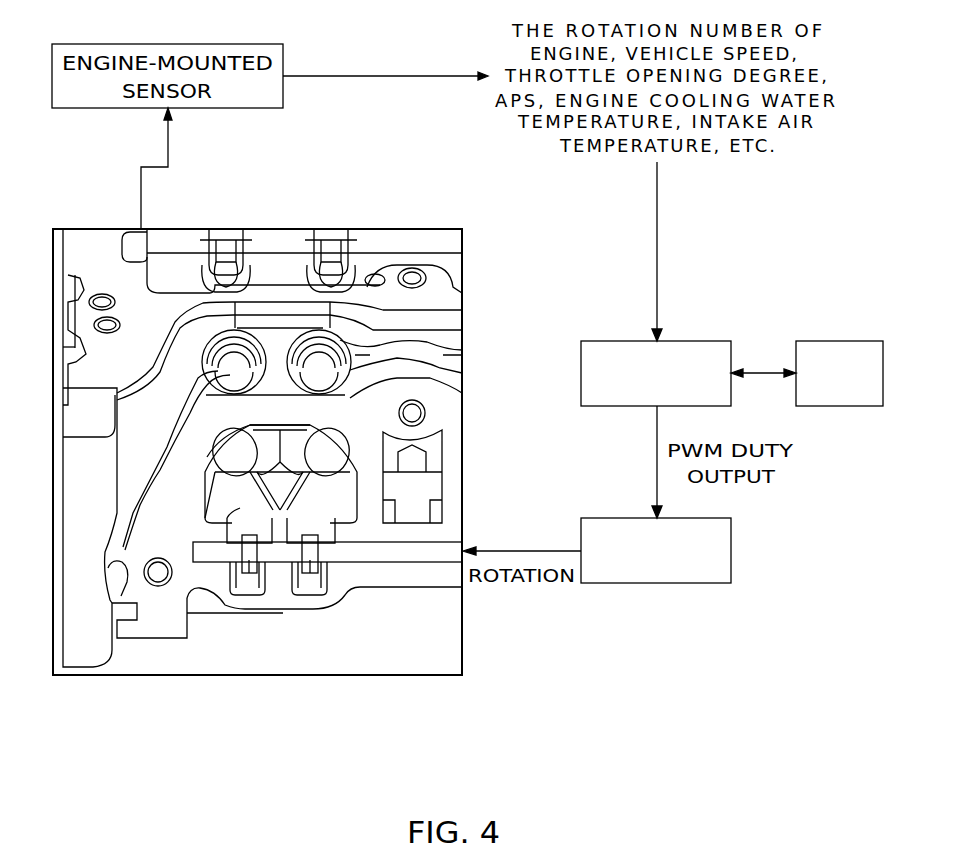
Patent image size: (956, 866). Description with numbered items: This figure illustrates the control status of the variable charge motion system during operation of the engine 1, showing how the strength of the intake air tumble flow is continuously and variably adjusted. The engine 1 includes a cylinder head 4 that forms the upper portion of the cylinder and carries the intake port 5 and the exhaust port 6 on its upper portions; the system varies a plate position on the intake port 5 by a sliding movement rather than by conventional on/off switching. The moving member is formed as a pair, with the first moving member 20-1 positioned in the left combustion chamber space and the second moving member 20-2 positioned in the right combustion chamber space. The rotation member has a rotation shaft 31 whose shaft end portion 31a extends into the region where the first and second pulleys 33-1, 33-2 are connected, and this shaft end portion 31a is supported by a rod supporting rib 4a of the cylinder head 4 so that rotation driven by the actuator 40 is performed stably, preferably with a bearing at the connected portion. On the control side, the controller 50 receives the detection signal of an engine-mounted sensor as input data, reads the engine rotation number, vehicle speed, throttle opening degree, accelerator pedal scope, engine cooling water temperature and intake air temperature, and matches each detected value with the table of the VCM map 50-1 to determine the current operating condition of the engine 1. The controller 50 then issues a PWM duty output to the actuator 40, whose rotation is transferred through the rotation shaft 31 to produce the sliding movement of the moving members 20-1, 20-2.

The engine 1 is at (387, 229).
The cylinder head 4 is at (78, 547).
The rod supporting rib 4a is at (128, 607).
The intake port 5 is at (313, 437).
The exhaust port 6 is at (320, 313).
The first moving member 20-1 is at (238, 495).
The second moving member 20-2 is at (327, 490).
The rotation shaft 31 is at (393, 553).
The shaft end portion 31a is at (180, 605).
The first pulley 33-1 is at (245, 578).
The second pulley 33-2 is at (305, 580).
The actuator 40 is at (733, 548).
The controller 50 is at (714, 340).
The VCM map 50-1 is at (838, 340).